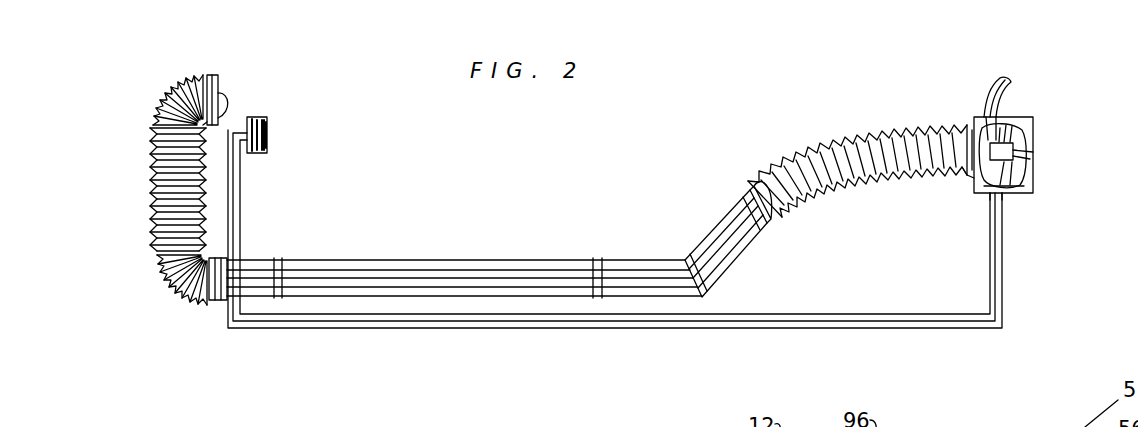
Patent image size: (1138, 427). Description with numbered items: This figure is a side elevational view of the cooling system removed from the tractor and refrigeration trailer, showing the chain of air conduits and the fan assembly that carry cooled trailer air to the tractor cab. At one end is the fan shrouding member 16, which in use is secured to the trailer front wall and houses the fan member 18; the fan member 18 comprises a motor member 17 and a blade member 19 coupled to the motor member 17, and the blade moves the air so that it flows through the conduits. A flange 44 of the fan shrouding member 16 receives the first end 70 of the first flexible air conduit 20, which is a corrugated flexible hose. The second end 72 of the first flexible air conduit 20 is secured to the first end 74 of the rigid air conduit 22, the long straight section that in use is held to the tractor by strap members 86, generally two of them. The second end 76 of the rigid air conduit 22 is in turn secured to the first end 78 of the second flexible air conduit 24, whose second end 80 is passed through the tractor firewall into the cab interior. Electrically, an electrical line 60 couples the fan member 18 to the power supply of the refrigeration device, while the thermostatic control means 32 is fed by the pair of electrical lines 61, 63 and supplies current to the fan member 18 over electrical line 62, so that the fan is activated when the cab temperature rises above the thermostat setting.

The fan shrouding member 16 is at (1005, 127).
The motor member 17 is at (1028, 158).
The fan member 18 is at (1041, 139).
The blade member 19 is at (1028, 192).
The first flexible air conduit 20 is at (850, 140).
The rigid air conduit 22 is at (463, 262).
The second flexible air conduit 24 is at (157, 192).
The thermostatic control means 32 is at (267, 147).
The flange 44 is at (972, 140).
The electrical line 60 is at (1011, 112).
The electrical line 61 is at (228, 130).
The electrical line 62 is at (266, 120).
The electrical line 63 is at (243, 152).
The first end of the first flexible air conduit 70 is at (970, 180).
The second end of the first flexible air conduit 72 is at (748, 187).
The first end of the rigid air conduit 74 is at (787, 210).
The second end of the rigid air conduit 76 is at (208, 296).
The first end of the second flexible air conduit 78 is at (187, 294).
The second end of the second flexible air conduit 80 is at (155, 176).
The strap member 86 is at (285, 296).